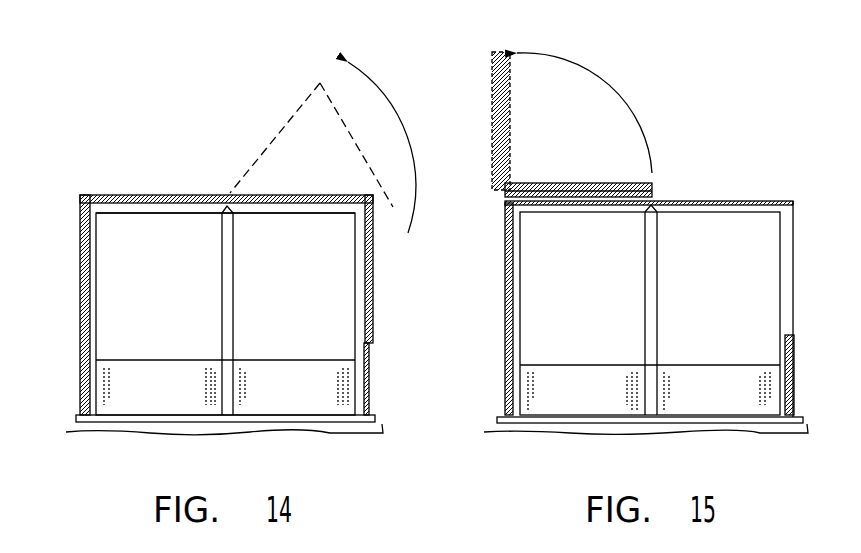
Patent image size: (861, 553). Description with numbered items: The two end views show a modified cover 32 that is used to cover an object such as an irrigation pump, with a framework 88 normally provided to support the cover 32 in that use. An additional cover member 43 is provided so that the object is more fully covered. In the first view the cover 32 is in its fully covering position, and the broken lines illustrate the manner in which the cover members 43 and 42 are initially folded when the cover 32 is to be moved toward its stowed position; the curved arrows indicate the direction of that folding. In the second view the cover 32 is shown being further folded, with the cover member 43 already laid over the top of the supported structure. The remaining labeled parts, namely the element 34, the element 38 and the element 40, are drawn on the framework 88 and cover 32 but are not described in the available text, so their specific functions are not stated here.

In FIG. 14, the modified cover 32 is at (183, 192).
In FIG. 15, the modified cover 32 is at (545, 180).
In FIG. 14, the divider partition 34 is at (99, 309).
In FIG. 15, the divider partition 34 is at (526, 330).
In FIG. 14, the housing frame 38 is at (78, 228).
In FIG. 15, the housing frame 38 is at (500, 232).
In FIG. 14, the top panel 40 is at (132, 192).
In FIG. 14, the cover member 42 is at (322, 193).
In FIG. 14, the additional cover member 43 is at (375, 278).
In FIG. 15, the additional cover member 43 is at (596, 180).
In FIG. 14, the framework 88 is at (80, 385).
In FIG. 15, the framework 88 is at (500, 385).